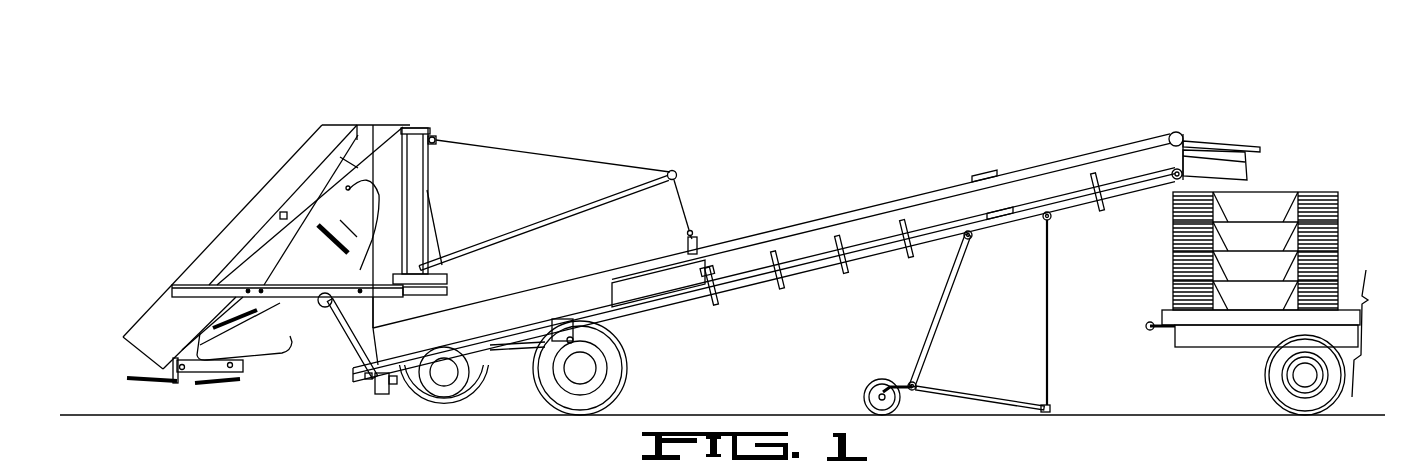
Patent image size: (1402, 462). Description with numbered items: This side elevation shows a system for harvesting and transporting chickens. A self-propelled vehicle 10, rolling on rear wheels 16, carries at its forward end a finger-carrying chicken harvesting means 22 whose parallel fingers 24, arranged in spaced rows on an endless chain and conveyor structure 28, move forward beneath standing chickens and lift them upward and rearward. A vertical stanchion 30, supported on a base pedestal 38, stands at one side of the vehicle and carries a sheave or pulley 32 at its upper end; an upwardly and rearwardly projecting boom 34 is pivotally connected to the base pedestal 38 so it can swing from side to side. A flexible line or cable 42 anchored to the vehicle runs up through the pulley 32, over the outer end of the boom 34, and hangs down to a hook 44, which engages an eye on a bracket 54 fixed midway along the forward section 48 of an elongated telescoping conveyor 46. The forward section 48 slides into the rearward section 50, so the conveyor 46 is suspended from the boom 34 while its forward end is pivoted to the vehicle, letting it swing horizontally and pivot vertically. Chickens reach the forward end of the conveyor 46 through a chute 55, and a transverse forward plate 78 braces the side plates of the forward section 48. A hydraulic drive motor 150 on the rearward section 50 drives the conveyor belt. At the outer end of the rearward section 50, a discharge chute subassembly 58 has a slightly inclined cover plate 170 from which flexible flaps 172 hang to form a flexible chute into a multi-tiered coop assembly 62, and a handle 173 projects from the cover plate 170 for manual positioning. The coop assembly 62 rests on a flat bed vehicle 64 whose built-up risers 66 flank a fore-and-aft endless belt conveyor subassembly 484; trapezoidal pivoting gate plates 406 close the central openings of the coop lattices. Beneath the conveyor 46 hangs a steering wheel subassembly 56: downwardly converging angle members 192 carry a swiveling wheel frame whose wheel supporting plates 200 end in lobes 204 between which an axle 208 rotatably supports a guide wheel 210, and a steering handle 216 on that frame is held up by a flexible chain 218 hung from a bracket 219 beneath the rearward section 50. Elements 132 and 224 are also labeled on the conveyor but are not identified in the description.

The self-propelled vehicle 10 is at (645, 349).
The rear wheels 16 is at (613, 385).
The finger-carrying chicken harvesting means 22 is at (231, 222).
The fingers 24 is at (150, 384).
The endless chain and conveyor structure 28 is at (185, 385).
The vertical stanchion 30 is at (429, 175).
The sheave or pulley 32 is at (434, 137).
The boom 34 is at (524, 224).
The base pedestal 38 is at (441, 278).
The flexible line or cable 42 is at (494, 143).
The hook 44 is at (685, 235).
The elongated telescoping conveyor 46 is at (816, 206).
The forward or inner section 48 is at (558, 316).
The rearward or outer section 50 is at (968, 217).
The bracket 54 is at (697, 247).
The chute 55 is at (410, 322).
The steering wheel subassembly 56 is at (918, 341).
The discharge chute subassembly 58 is at (1203, 127).
The multi-tiered coop assembly 62 is at (1347, 222).
The flat bed vehicle 64 is at (1255, 385).
The supporting pedestals or risers 66 is at (1343, 318).
The forward plate 78 is at (356, 356).
The slats 132 is at (852, 243).
The hydraulic drive motor 150 is at (1169, 133).
The cover plate 170 is at (1228, 141).
The flexible flaps 172 is at (1240, 168).
The handle 173 is at (1258, 149).
The angle member 192 is at (942, 316).
The wheel supporting plate 200 is at (905, 382).
The lobe 204 is at (877, 383).
The axle 208 is at (884, 404).
The guide wheel 210 is at (866, 395).
The steering handle 216 is at (954, 393).
The flexible chain 218 is at (1050, 303).
The bracket 219 is at (1051, 218).
The bracket 224 is at (753, 302).
The pivoting gate plate 406 is at (1274, 217).
The endless belt conveyor subassembly 484 is at (1145, 344).